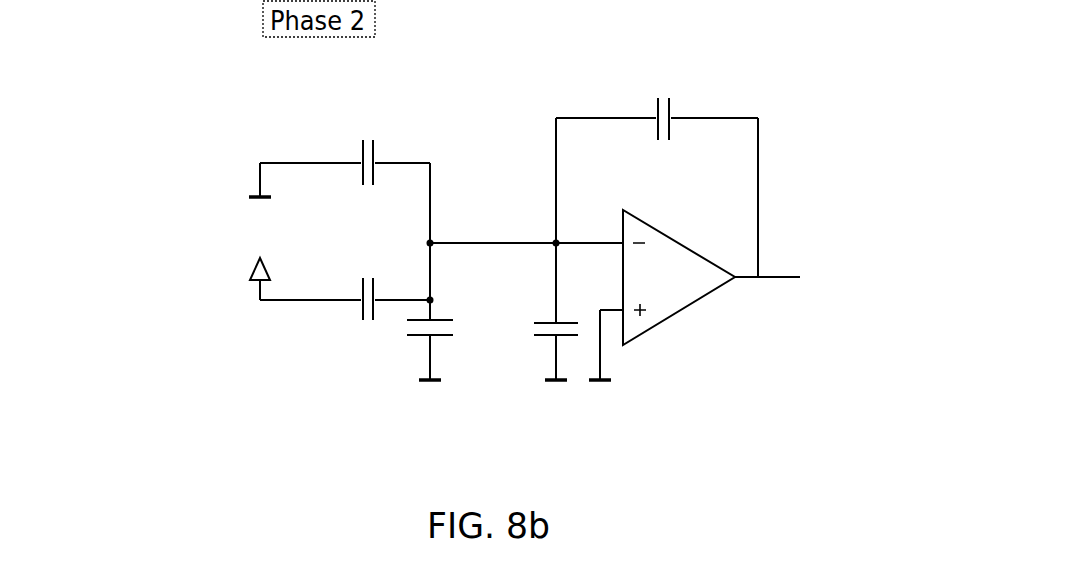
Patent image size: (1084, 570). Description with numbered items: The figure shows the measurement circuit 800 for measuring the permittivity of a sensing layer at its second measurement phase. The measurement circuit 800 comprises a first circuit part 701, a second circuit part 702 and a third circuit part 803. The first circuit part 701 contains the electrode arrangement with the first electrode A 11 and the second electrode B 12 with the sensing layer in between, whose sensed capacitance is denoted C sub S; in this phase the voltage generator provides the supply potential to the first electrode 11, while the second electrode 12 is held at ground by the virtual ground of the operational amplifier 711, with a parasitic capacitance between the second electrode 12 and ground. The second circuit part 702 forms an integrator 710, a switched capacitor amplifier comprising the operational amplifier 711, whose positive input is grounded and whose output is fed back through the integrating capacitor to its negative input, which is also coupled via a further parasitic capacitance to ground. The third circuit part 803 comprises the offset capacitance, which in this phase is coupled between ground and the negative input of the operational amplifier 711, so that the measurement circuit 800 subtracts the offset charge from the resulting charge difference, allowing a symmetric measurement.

The third circuit part 803 is at (215, 115).
The first circuit part 701 is at (218, 263).
The first electrode 11 is at (362, 280).
The second electrode 12 is at (373, 320).
The integrator 710 is at (778, 84).
The operational amplifier 711 is at (658, 300).
The second circuit part 702 is at (528, 409).
The measurement circuit 800 is at (910, 482).